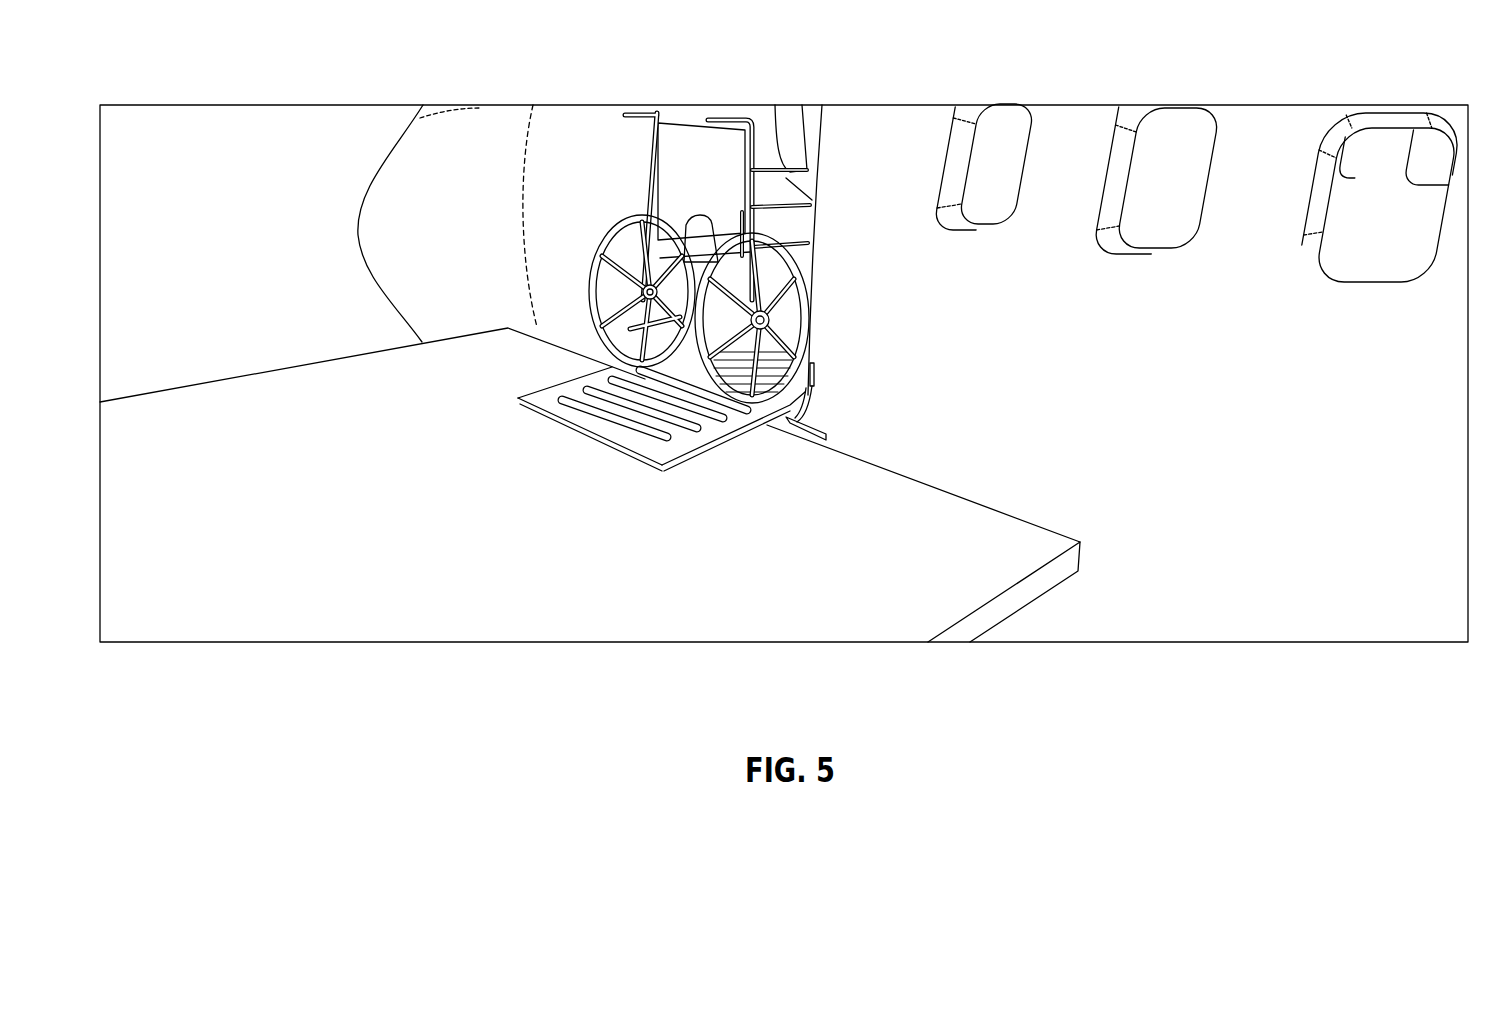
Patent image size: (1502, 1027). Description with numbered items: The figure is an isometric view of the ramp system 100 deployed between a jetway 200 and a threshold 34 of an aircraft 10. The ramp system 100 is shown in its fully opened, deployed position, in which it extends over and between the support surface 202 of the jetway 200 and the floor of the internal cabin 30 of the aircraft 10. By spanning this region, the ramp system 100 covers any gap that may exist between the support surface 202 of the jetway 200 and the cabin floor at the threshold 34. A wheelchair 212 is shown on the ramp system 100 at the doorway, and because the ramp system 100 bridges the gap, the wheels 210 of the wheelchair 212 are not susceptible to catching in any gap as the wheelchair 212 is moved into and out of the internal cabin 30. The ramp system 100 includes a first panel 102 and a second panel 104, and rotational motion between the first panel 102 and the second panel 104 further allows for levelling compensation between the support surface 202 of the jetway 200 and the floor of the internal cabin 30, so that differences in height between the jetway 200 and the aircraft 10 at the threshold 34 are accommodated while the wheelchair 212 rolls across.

The aircraft 10 is at (903, 127).
The internal cabin 30 is at (809, 127).
The threshold 34 is at (812, 115).
The wheels 210 is at (600, 307).
The wheelchair 212 is at (702, 167).
The ramp system 100 is at (725, 529).
The first panel 102 is at (645, 457).
The second panel 104 is at (810, 393).
The jetway 200 is at (593, 610).
The support surface 202 is at (877, 587).